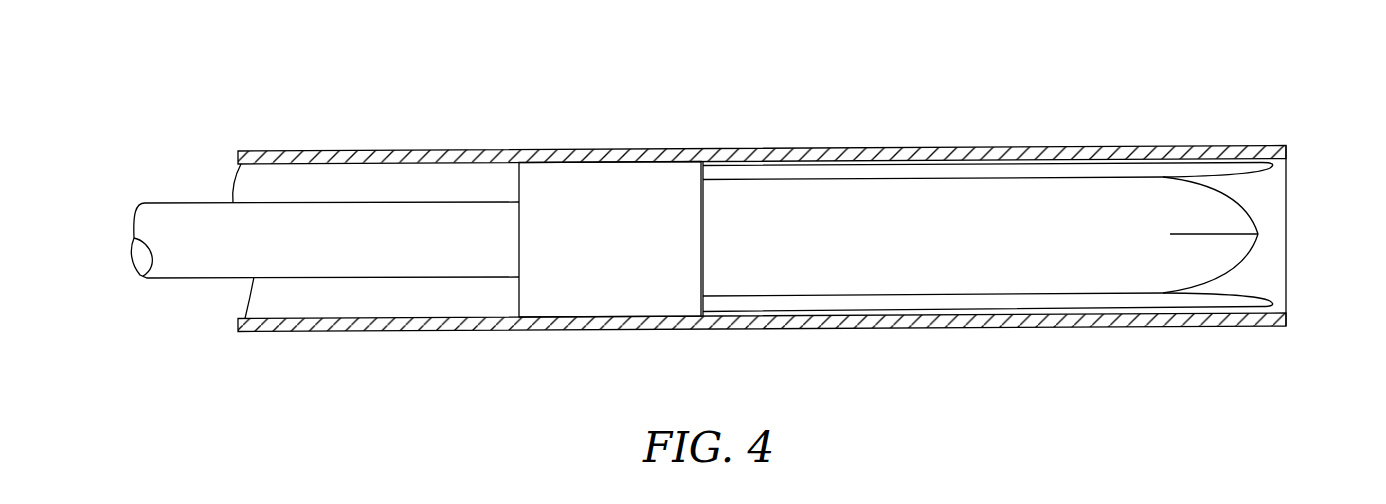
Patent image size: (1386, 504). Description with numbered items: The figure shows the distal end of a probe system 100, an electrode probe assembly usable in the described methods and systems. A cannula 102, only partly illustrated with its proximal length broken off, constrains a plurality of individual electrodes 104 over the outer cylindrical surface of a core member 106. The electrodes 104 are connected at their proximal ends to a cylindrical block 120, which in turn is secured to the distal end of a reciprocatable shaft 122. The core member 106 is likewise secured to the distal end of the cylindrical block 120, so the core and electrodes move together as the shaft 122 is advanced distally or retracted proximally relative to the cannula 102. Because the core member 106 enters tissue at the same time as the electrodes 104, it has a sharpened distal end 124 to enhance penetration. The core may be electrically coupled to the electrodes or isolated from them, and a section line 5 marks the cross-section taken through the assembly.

The probe system 100 is at (1145, 86).
The cannula 102 is at (380, 155).
The individual electrodes 104 is at (1135, 300).
The core member 106 is at (812, 205).
The cylindrical block 120 is at (595, 298).
The reciprocatable shaft 122 is at (330, 253).
The sharpened distal end 124 is at (1227, 250).
The section line 5- 5 is at (920, 133).